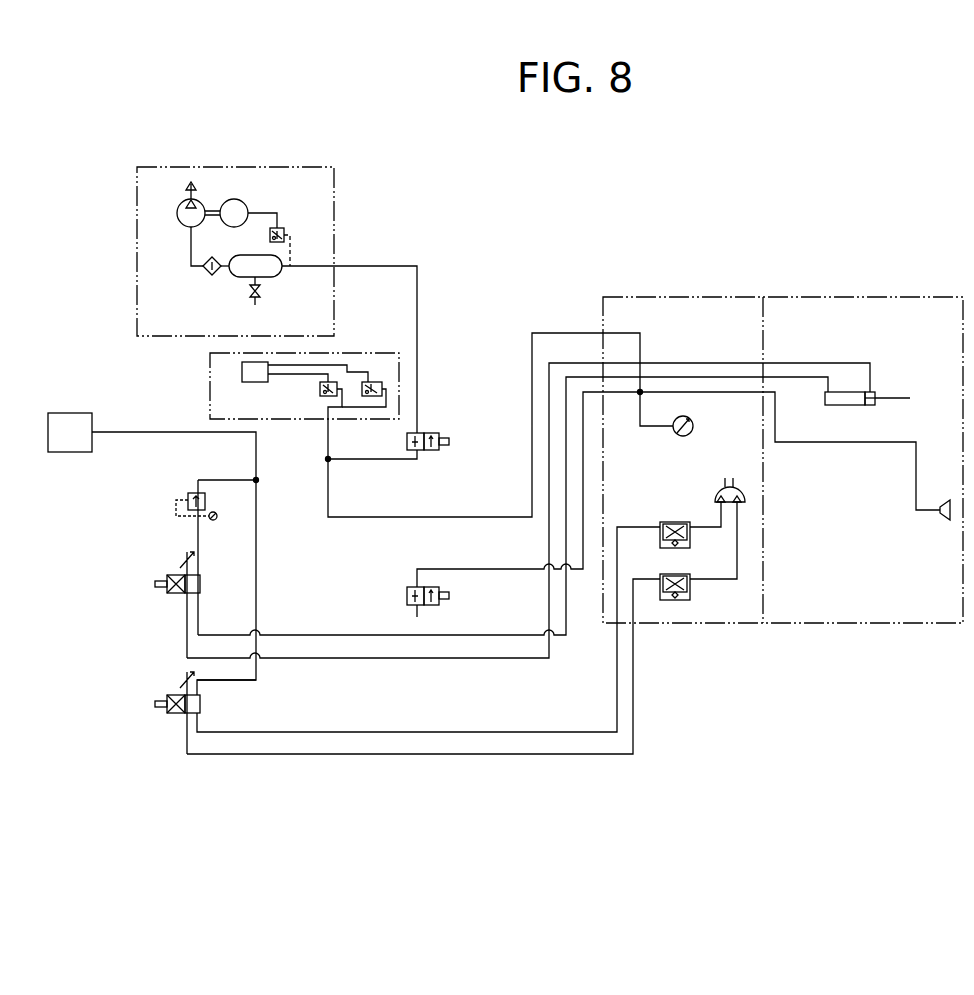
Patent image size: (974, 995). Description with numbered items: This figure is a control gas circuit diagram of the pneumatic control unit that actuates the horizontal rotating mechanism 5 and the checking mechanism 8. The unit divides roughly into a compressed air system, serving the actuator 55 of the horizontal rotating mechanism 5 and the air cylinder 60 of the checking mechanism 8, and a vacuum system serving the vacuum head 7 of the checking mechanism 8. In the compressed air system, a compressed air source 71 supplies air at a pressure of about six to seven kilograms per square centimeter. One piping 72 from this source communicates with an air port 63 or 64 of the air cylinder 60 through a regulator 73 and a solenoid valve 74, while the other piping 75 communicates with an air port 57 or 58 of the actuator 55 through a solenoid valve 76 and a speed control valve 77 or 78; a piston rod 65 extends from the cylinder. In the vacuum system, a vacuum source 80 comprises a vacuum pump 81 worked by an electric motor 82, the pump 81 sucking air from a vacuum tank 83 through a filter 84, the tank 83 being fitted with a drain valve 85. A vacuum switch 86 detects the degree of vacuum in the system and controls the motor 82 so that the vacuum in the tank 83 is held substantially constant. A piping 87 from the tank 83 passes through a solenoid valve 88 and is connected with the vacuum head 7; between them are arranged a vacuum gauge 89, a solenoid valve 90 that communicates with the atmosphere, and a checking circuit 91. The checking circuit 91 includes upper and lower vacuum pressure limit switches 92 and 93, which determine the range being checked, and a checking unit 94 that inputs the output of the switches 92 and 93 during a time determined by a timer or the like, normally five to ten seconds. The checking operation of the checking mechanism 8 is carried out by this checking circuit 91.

The horizontal rotating mechanism 5 is at (712, 622).
The vacuum head 7 is at (940, 522).
The checking mechanism 8 is at (880, 312).
The actuator 55 is at (720, 485).
The air port 57 is at (713, 502).
The air port 58 is at (737, 502).
The air cylinder 60 is at (845, 396).
The air port 63 is at (822, 387).
The air port 64 is at (873, 390).
The piston rod 65 is at (892, 398).
The compressed air source 71 is at (73, 453).
The piping 72 is at (227, 480).
The regulator 73 is at (188, 498).
The solenoid valve 74 is at (168, 595).
The piping 75 is at (225, 680).
The solenoid valve 76 is at (166, 713).
The speed control valve 77 is at (662, 522).
The speed control valve 78 is at (692, 592).
The vacuum source 80 is at (235, 178).
The vacuum pump 81 is at (181, 205).
The electric motor 82 is at (240, 215).
The vacuum tank 83 is at (270, 268).
The filter 84 is at (208, 273).
The drain valve 85 is at (252, 295).
The vacuum switch 86 is at (280, 233).
The piping 87 is at (417, 302).
The solenoid valve 88 is at (433, 433).
The vacuum gauge 89 is at (693, 428).
The solenoid valve 90 is at (440, 603).
The checking circuit 91 is at (370, 362).
The upper vacuum pressure limit switch 92 is at (320, 388).
The lower vacuum pressure limit switch 93 is at (377, 384).
The checking unit 94 is at (242, 372).